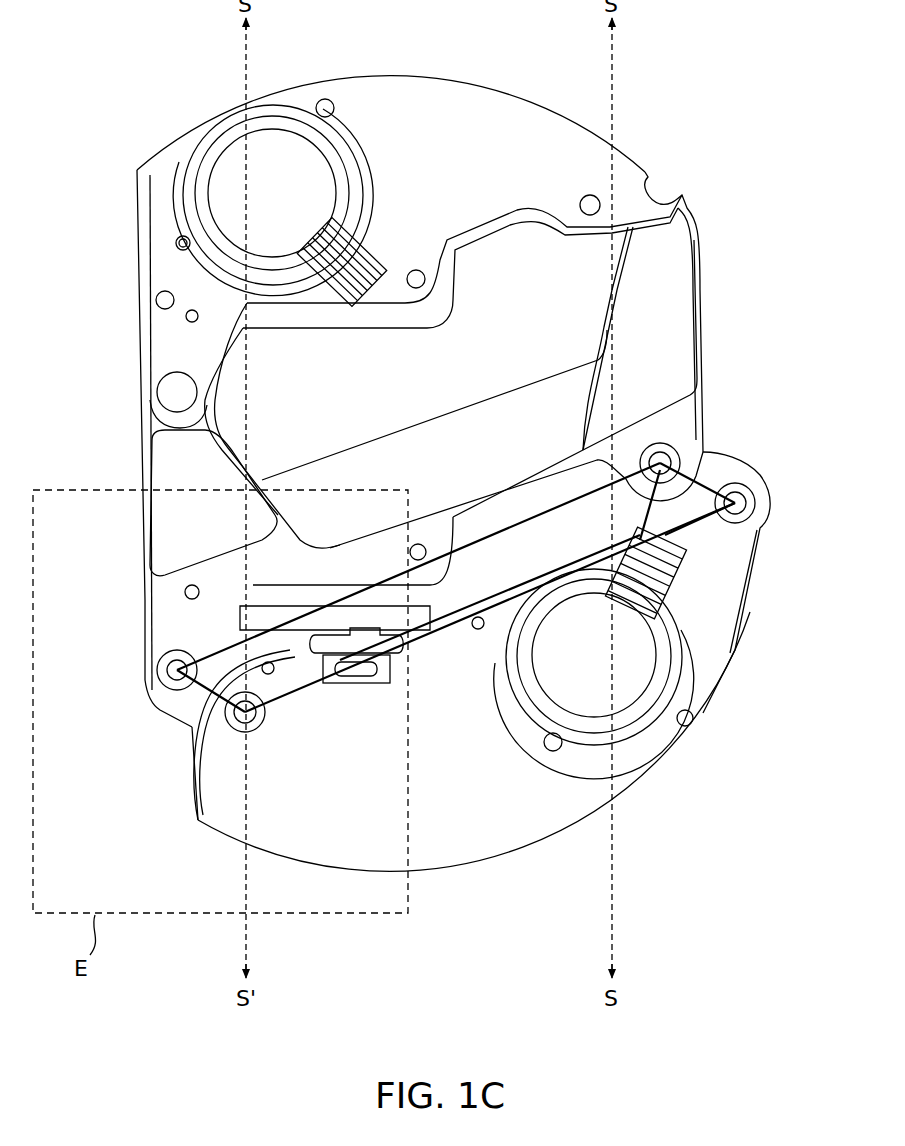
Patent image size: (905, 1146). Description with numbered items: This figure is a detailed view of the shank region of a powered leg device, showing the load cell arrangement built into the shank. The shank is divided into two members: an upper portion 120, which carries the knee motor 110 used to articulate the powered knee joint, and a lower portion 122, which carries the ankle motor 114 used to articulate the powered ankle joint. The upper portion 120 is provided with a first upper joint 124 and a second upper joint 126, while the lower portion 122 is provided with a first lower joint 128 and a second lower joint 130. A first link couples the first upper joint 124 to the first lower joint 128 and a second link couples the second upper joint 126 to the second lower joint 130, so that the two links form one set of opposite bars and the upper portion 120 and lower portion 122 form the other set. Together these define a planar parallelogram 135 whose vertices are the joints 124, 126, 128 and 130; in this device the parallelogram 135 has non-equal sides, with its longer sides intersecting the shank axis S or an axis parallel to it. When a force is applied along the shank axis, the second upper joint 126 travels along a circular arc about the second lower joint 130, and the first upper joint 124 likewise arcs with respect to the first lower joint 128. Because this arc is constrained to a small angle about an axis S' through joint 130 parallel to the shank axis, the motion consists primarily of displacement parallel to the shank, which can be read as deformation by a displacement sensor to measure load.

The knee motor 110 is at (364, 114).
The ankle motor 114 is at (734, 625).
The upper portion 120 is at (682, 198).
The lower portion 122 is at (543, 852).
The first upper joint 124 is at (714, 420).
The second upper joint 126 is at (135, 676).
The first lower joint 128 is at (784, 500).
The second lower joint 130 is at (238, 742).
The parallelogram 135 is at (284, 712).